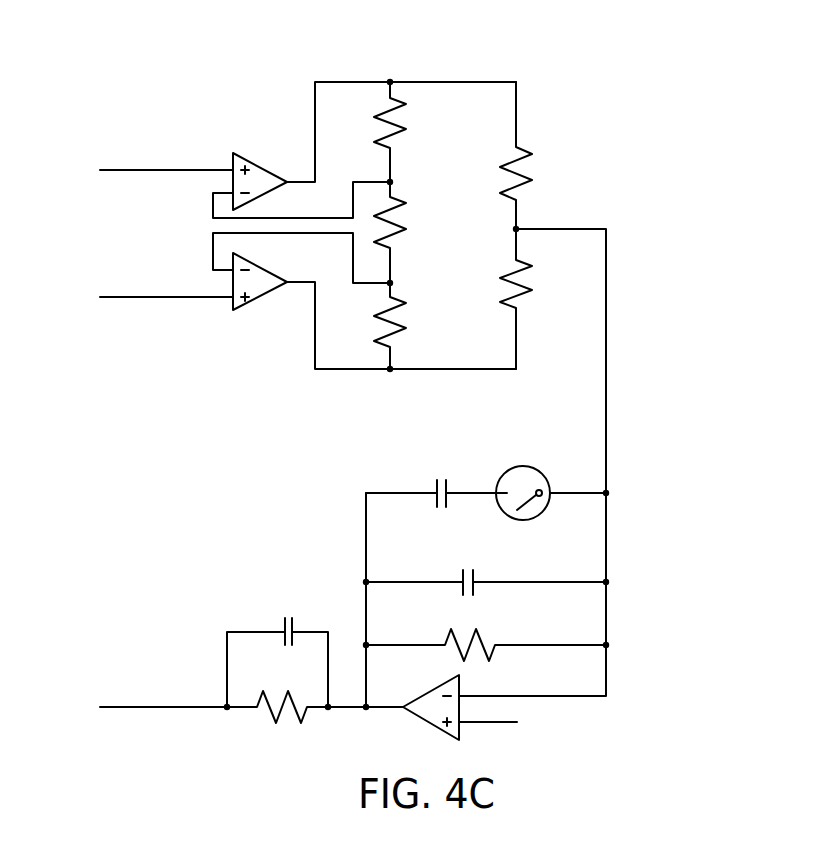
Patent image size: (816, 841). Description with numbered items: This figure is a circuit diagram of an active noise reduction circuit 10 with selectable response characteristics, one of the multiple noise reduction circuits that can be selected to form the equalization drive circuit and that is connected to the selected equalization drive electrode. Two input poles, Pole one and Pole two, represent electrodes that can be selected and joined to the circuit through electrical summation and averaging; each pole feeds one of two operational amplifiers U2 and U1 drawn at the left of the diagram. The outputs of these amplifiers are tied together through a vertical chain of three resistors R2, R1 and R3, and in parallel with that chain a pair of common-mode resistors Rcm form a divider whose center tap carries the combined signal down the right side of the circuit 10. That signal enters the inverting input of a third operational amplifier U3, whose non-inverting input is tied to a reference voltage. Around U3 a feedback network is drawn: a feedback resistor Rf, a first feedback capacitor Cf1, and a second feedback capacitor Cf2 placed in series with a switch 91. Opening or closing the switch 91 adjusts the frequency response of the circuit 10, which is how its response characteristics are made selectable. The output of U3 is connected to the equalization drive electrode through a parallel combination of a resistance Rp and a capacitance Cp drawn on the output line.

The noise reduction circuit 10 is at (354, 388).
The switch 91 is at (542, 466).
The operational amplifier U1 is at (264, 276).
The operational amplifier U2 is at (270, 185).
The operational amplifier U3 is at (427, 703).
The resistor R1 is at (410, 232).
The resistor R2 is at (410, 132).
The resistor R3 is at (410, 326).
The common-mode resistor Rcm is at (545, 225).
The feedback capacitor Cf1 is at (486, 568).
The feedback capacitor Cf2 is at (436, 477).
The feedback resistor Rf is at (486, 631).
The parasitic capacitance Cp is at (277, 645).
The parasitic resistance Rp is at (251, 689).